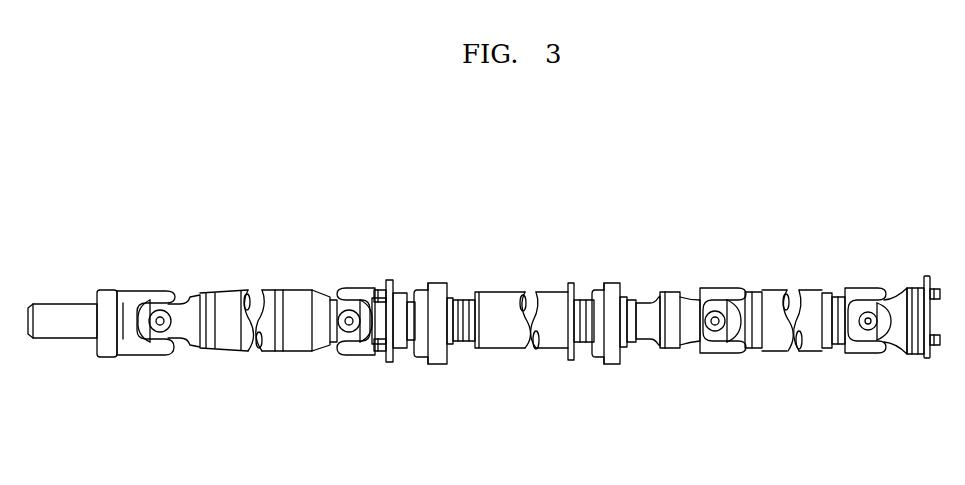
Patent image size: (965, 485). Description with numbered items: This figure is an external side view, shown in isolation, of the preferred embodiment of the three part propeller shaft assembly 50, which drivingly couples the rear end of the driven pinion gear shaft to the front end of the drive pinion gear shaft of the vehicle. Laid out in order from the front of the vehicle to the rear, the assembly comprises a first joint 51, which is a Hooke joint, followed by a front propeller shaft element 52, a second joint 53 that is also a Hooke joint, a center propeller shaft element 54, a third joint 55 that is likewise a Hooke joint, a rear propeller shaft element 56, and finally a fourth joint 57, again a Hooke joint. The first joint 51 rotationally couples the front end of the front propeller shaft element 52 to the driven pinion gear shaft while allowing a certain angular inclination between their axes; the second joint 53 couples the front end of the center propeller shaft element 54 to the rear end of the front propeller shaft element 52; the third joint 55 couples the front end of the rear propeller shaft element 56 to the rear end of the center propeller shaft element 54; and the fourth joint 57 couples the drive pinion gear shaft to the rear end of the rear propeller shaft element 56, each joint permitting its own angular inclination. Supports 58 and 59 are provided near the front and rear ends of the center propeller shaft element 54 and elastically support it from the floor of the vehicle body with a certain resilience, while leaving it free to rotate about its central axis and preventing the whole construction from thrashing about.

The three part propeller shaft assembly 50 is at (548, 186).
The first joint 51 is at (104, 364).
The front propeller shaft element 52 is at (248, 291).
The second joint 53 is at (362, 362).
The center propeller shaft element 54 is at (508, 292).
The third joint 55 is at (733, 364).
The rear propeller shaft element 56 is at (771, 290).
The fourth joint 57 is at (912, 360).
The support 58 is at (434, 284).
The support 59 is at (611, 283).